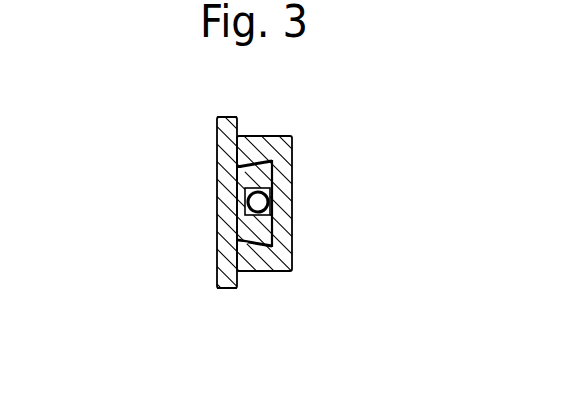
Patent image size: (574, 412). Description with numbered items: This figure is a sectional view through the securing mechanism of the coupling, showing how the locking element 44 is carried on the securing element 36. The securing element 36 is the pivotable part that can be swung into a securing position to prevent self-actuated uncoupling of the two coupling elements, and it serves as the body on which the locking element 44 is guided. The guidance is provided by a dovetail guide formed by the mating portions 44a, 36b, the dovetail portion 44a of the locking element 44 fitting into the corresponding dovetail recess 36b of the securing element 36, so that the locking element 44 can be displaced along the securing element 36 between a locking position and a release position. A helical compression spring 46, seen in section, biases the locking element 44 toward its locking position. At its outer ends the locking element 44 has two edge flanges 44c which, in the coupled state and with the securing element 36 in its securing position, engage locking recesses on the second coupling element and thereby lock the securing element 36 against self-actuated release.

The securing element 36 is at (298, 146).
The dovetail guide portion of securing element 36b is at (249, 247).
The locking element 44 is at (217, 203).
The dovetail guide portion of locking element 44a is at (275, 229).
The edge flanges 44c is at (217, 125).
The helical compression spring 46 is at (269, 200).